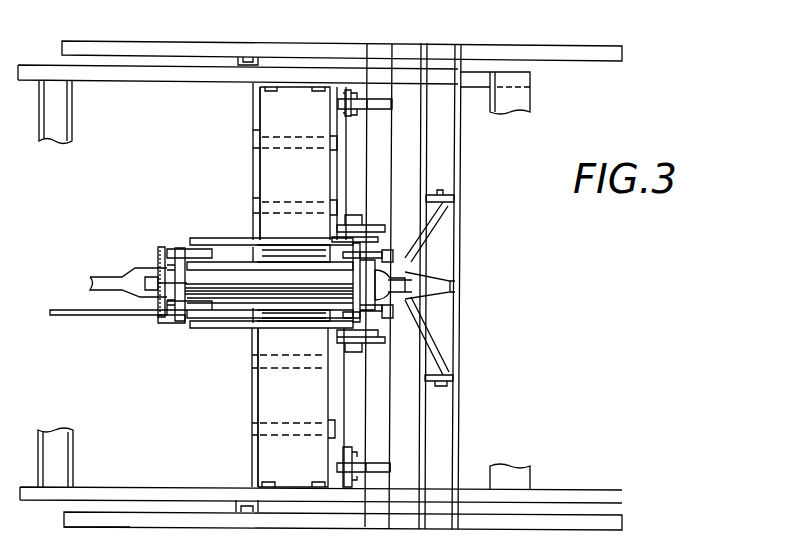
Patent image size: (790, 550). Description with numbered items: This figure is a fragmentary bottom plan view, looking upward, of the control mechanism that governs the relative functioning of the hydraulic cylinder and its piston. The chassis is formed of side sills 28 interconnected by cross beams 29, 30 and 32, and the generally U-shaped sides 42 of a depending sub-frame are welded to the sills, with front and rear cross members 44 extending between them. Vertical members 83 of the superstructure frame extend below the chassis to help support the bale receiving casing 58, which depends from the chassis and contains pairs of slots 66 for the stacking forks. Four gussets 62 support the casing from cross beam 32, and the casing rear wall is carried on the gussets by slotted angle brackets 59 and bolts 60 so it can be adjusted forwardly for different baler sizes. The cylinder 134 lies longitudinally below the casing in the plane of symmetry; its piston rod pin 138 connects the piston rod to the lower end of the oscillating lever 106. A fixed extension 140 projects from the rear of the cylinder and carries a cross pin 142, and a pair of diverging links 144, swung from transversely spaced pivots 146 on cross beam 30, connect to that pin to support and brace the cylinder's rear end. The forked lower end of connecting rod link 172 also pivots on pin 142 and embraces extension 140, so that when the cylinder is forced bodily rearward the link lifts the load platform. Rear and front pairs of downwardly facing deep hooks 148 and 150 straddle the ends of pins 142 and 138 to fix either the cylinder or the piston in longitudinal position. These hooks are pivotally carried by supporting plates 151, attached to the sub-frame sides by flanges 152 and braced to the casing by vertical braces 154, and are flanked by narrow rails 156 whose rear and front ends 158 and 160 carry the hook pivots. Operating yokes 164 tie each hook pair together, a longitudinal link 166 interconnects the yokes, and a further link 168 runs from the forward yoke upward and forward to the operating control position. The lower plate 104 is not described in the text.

The side rails or sills 28 is at (221, 54).
The lower plate 104 is at (125, 528).
The U-shaped sides of depending sub-frame 42 is at (482, 75).
The vertical members of super-structure frame 83 is at (265, 61).
The cross beam 29 is at (522, 97).
The cross members 44 is at (72, 108).
The cross beam 32 is at (382, 395).
The cross beam 30 is at (440, 138).
The pivots 146 is at (443, 191).
The diverging oscillatable links 144 is at (440, 212).
The bale receiving and supporting casing 58 is at (253, 106).
The slots 66 is at (258, 141).
The flanges 152 is at (297, 95).
The supporting plates 151 is at (303, 192).
The slotted angle brackets 59 is at (362, 99).
The bolts 60 is at (358, 116).
The gussets 62 is at (380, 108).
The braces 154 is at (270, 243).
The rails 156 is at (312, 321).
The longitudinal link 166 is at (317, 246).
The front ends of rails 160 is at (193, 238).
The cylinder 134 is at (197, 294).
The cross pin 142 is at (407, 324).
The fixed extension 140 is at (433, 279).
The link (connecting rod) 172 is at (440, 289).
The rear hooks 148 is at (405, 252).
The rear ends of rails 158 is at (400, 264).
The operating yokes 164 is at (400, 241).
The front hooks 150 is at (165, 262).
The piston rod pin 138 is at (154, 262).
The oscillating lever 106 is at (103, 276).
The link 168 is at (73, 316).